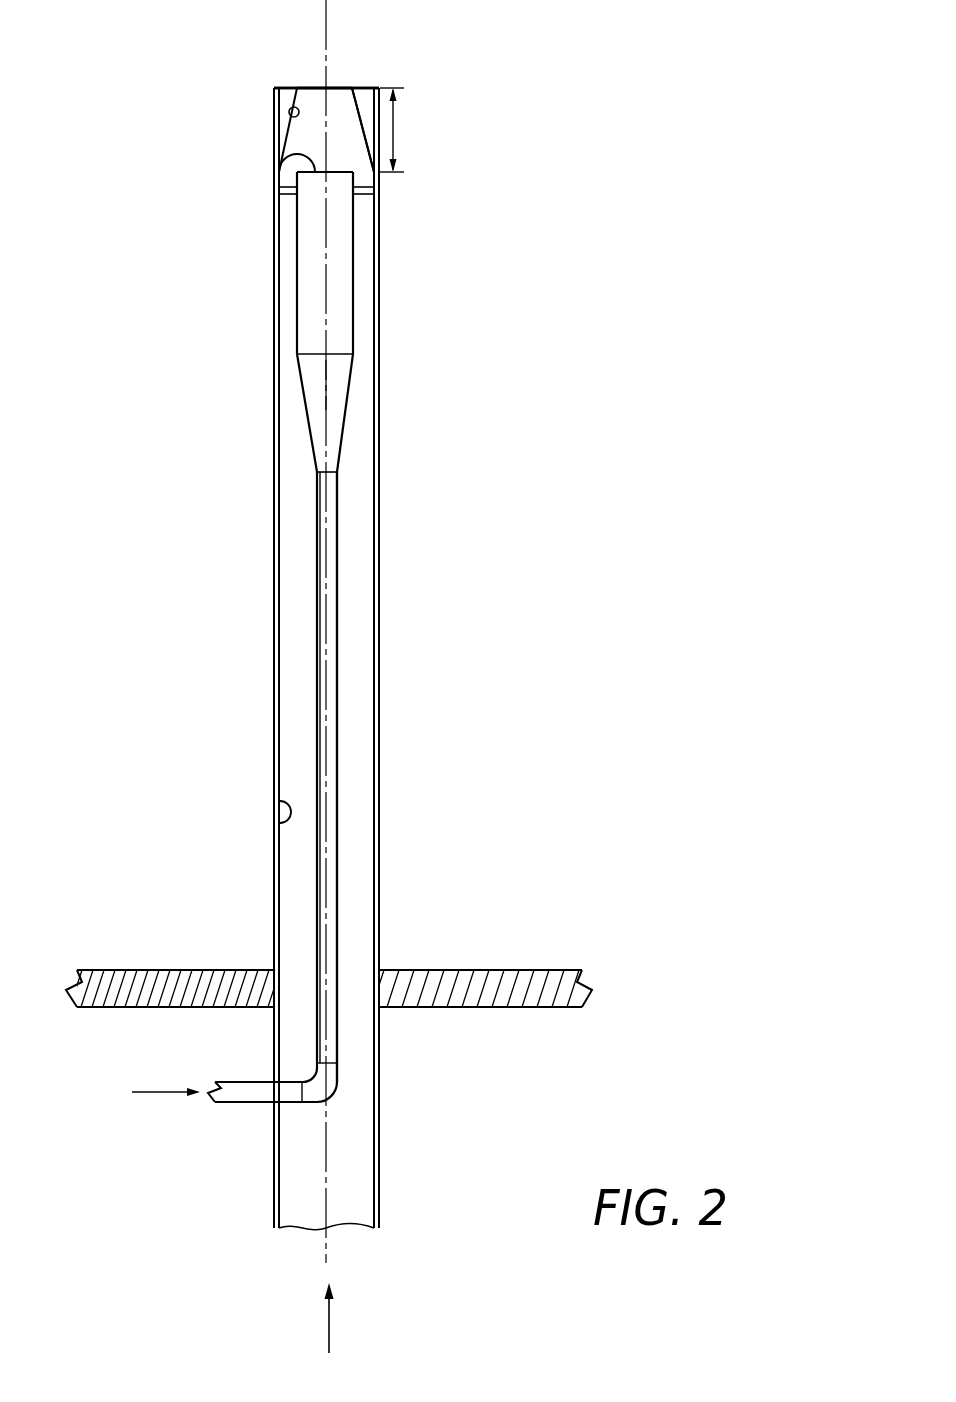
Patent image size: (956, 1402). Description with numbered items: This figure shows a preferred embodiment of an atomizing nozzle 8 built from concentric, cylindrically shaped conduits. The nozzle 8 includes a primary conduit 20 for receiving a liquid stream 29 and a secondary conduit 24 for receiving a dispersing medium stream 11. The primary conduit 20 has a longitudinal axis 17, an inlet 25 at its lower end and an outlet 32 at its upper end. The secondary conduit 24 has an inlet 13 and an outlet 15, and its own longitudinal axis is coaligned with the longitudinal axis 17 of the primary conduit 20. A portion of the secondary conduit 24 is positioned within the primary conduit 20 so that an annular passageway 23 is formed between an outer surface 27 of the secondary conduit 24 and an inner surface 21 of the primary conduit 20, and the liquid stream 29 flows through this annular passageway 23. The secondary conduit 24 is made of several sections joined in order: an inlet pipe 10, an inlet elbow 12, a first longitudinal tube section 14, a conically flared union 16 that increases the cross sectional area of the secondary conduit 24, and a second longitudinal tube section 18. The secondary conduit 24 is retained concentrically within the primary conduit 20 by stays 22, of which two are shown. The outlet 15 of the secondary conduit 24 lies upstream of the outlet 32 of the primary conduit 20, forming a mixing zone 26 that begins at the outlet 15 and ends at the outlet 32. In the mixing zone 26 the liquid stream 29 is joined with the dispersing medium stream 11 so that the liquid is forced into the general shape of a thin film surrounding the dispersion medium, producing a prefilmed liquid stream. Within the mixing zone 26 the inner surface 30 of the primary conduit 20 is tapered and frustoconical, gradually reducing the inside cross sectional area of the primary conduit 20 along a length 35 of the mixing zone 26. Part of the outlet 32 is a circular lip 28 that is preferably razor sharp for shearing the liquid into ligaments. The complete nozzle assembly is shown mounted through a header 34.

The atomizing nozzle 8 is at (180, 662).
The inlet pipe 10 is at (263, 1103).
The dispersing medium stream 11 is at (162, 1093).
The inlet elbow 12 is at (338, 1083).
The inlet 13 is at (205, 1092).
The first longitudinal tube section 14 is at (327, 738).
The outlet 15 is at (292, 168).
The conically flared union 16 is at (325, 400).
The longitudinal axis 17 is at (325, 383).
The second longitudinal tube section 18 is at (325, 270).
The primary conduit 20 is at (382, 803).
The inner surface 21 is at (280, 821).
The stays 22 is at (362, 193).
The annular passageway 23 is at (347, 568).
The secondary conduit 24 is at (316, 547).
The inlet 25 is at (357, 1230).
The mixing zone 26 is at (305, 135).
The outer surface 27 is at (338, 625).
The circular lip 28 is at (352, 88).
The liquid stream 29 is at (328, 1334).
The inner surface 30 is at (289, 116).
The outlet 32 is at (315, 88).
The header 34 is at (433, 980).
The length 35 is at (398, 130).